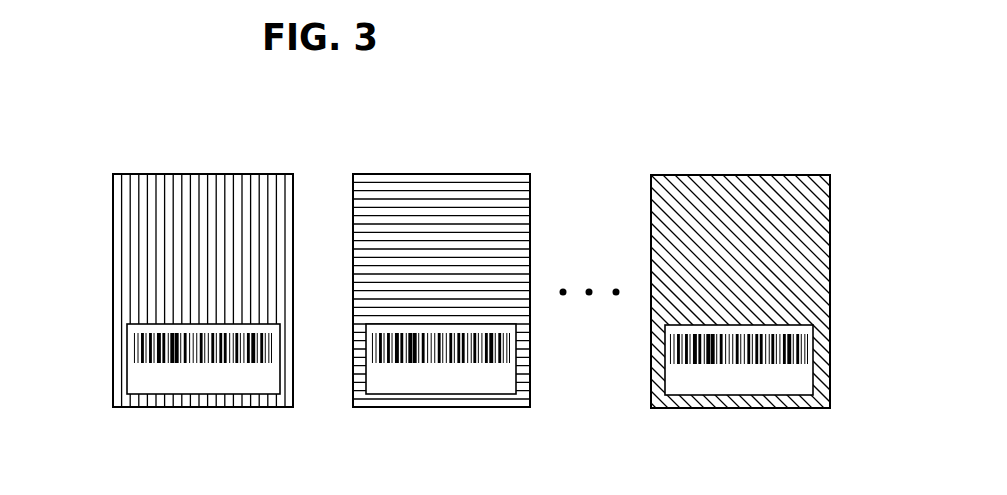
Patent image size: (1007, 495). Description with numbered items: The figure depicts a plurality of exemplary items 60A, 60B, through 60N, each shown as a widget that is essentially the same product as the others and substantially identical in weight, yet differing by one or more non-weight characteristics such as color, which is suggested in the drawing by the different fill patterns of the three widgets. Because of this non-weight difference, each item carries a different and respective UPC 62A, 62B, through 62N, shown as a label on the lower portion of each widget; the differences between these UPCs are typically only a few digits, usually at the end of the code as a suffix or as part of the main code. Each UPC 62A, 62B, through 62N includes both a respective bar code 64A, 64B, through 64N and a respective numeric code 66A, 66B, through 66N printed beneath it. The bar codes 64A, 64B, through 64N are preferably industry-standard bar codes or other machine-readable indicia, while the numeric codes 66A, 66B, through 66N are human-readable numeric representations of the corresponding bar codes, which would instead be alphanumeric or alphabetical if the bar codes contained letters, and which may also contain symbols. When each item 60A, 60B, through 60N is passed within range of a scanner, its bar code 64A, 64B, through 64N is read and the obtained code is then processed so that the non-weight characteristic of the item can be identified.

The item 60A is at (136, 146).
The item 60B is at (373, 146).
The item 60N is at (673, 146).
The UPC 62A is at (238, 404).
The UPC 62B is at (480, 404).
The UPC 62N is at (780, 405).
The bar code 64A is at (135, 345).
The bar code 64B is at (510, 348).
The bar code 64N is at (810, 348).
The numeric code 66A is at (162, 382).
The numeric code 66B is at (400, 382).
The numeric code 66N is at (700, 383).